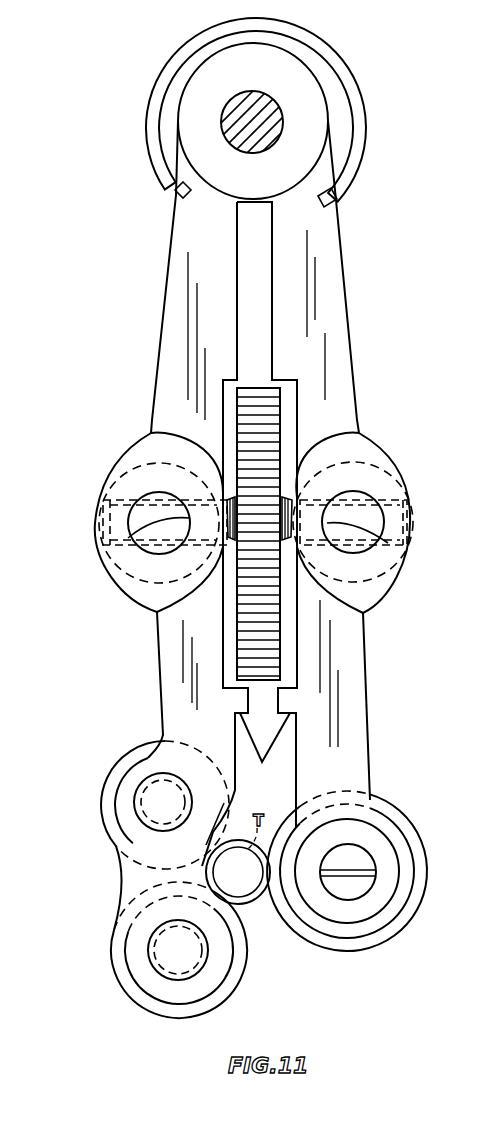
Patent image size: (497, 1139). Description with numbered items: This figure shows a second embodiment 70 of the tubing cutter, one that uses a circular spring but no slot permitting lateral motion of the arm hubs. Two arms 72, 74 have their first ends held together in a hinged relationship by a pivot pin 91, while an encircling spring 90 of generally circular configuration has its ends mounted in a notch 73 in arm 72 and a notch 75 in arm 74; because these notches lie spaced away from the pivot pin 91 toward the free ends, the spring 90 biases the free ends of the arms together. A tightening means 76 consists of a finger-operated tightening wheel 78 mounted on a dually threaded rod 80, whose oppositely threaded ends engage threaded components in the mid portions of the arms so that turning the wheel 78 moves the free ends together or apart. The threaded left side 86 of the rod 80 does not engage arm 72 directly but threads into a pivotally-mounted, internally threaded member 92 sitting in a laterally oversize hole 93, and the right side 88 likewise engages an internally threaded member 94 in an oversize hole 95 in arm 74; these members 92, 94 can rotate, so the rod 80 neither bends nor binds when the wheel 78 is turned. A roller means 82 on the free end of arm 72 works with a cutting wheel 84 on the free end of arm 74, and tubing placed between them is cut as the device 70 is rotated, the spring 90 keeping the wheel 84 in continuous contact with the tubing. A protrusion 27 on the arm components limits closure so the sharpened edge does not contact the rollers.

The protrusion 27 is at (265, 748).
The embodiment 70 is at (128, 385).
The arm 72 is at (162, 298).
The notch 73 is at (176, 190).
The arm 74 is at (346, 297).
The notch 75 is at (338, 190).
The tightening means 76 is at (220, 568).
The tightening wheel 78 is at (263, 433).
The dually threaded rod 80 is at (110, 525).
The roller means 82 is at (55, 897).
The cutting wheel 84 is at (355, 953).
The threaded left side 86 is at (160, 437).
The right side 88 is at (360, 435).
The encircling spring 90 is at (147, 110).
The pivot pin 91 is at (240, 95).
The internally threaded member 92 is at (127, 513).
The hole 93 is at (107, 544).
The internally threaded member 94 is at (393, 520).
The hole 95 is at (387, 543).